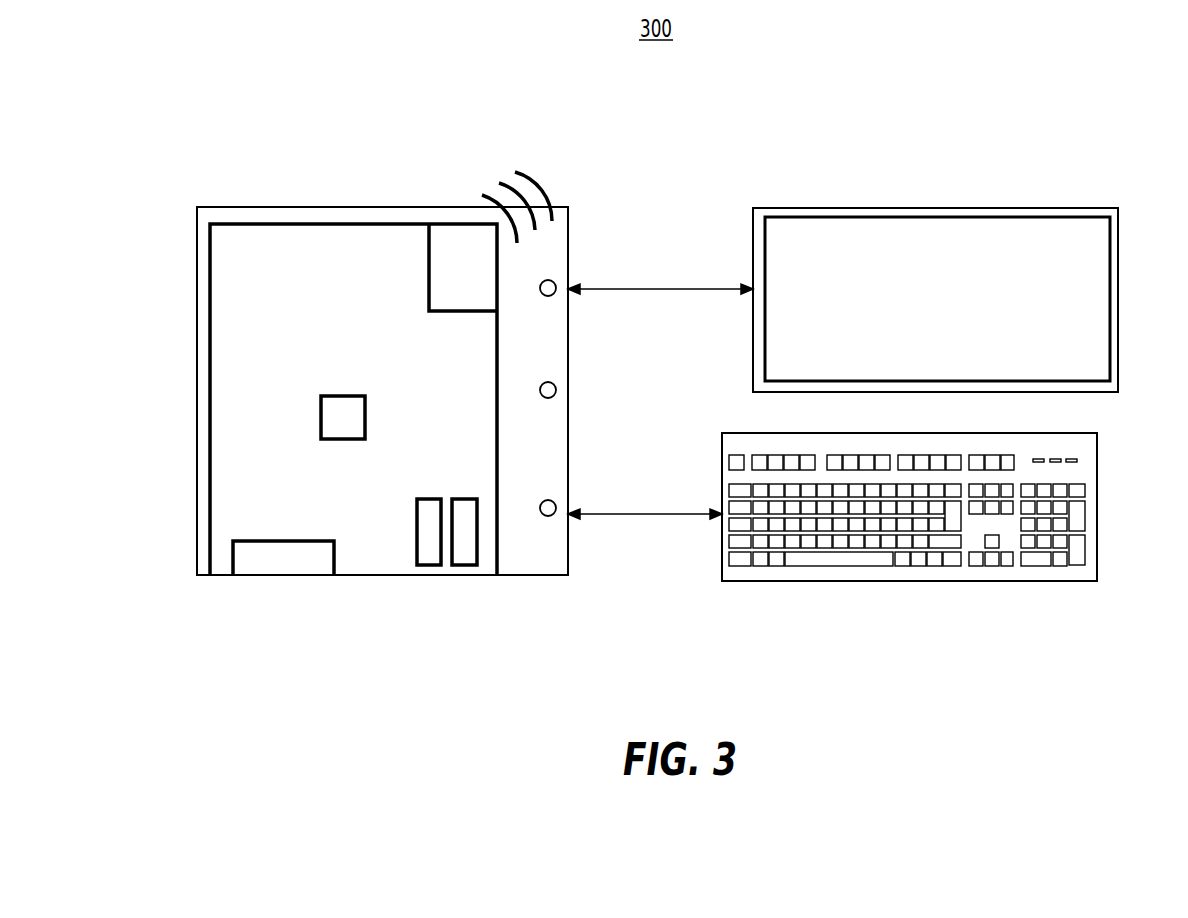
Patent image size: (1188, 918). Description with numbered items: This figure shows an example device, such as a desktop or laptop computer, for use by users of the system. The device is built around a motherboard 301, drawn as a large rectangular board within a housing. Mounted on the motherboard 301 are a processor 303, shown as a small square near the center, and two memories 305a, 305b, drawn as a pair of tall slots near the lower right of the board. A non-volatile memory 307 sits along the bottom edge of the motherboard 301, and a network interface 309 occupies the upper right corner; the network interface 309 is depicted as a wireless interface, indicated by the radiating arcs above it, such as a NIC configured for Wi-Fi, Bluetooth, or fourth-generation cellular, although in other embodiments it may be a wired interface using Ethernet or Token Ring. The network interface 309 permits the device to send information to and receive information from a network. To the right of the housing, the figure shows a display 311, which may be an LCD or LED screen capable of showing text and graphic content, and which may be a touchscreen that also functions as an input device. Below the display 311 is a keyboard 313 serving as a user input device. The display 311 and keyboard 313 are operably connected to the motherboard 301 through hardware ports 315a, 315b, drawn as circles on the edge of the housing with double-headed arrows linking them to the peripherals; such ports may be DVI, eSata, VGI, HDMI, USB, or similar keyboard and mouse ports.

The motherboard 301 is at (225, 373).
The processor 303 is at (358, 413).
The memory 305a is at (432, 552).
The memory 305b is at (463, 552).
The non-volatile memory 307 is at (287, 562).
The network interface 309 is at (440, 293).
The display 311 is at (833, 238).
The keyboard 313 is at (1089, 465).
The port 315a is at (548, 288).
The port 315b is at (548, 508).